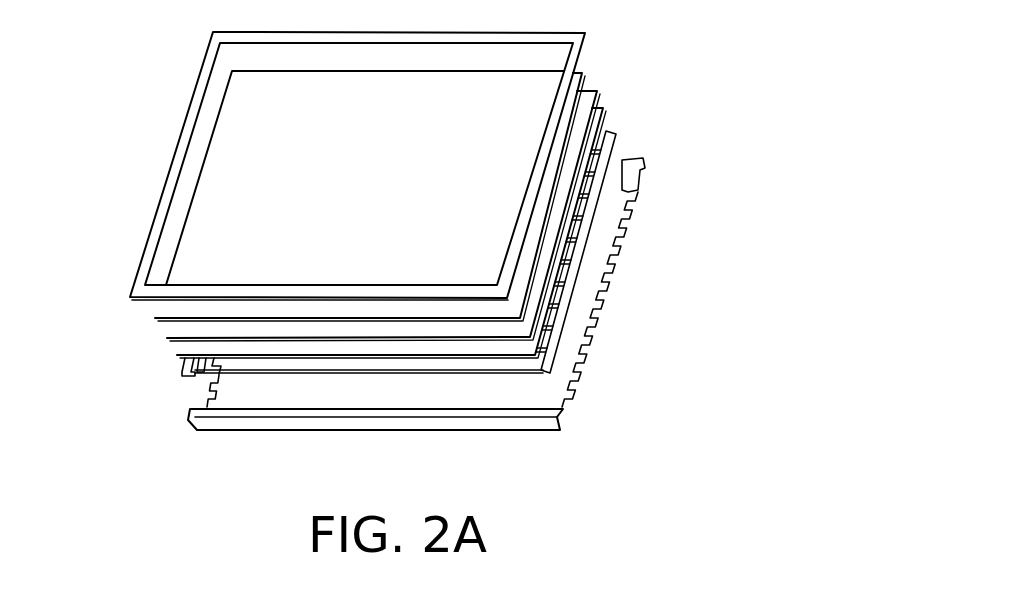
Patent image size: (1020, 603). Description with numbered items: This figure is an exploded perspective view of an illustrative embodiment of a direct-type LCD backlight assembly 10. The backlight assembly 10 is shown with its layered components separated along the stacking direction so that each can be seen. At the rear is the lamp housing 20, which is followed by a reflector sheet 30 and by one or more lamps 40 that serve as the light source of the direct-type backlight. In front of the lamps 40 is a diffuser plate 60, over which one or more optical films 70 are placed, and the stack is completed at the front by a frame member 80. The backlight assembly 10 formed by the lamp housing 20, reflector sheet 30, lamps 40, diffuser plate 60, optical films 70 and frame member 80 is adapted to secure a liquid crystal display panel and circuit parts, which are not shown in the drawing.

The backlight assembly 10 is at (158, 114).
The lamp housing 20 is at (573, 397).
The reflector sheet 30 is at (580, 318).
The lamp 40 is at (580, 218).
The diffuser plate 60 is at (600, 108).
The optical film 70 is at (584, 74).
The frame member 80 is at (587, 34).